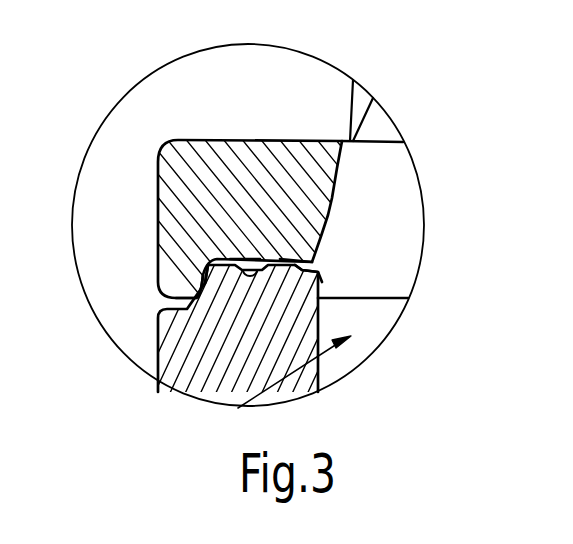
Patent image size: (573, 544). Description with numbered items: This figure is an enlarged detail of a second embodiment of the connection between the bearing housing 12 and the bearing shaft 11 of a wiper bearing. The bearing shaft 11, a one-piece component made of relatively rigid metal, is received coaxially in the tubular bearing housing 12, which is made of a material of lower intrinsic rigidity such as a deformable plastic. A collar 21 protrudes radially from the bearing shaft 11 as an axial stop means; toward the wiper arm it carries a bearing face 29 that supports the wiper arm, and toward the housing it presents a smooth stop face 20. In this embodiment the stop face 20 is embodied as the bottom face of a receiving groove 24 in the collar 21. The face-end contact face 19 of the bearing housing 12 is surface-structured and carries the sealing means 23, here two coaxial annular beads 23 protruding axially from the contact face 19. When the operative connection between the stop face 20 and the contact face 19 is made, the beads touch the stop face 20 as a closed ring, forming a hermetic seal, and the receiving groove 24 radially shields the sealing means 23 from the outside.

The bearing shaft 11 is at (238, 408).
The bearing housing 12 is at (192, 350).
The contact face 19 is at (293, 260).
The stop face 20 is at (245, 260).
The collar 21 is at (195, 193).
The sealing means 23 is at (240, 264).
The receiving groove 24 is at (200, 297).
The bearing face 29 is at (263, 140).